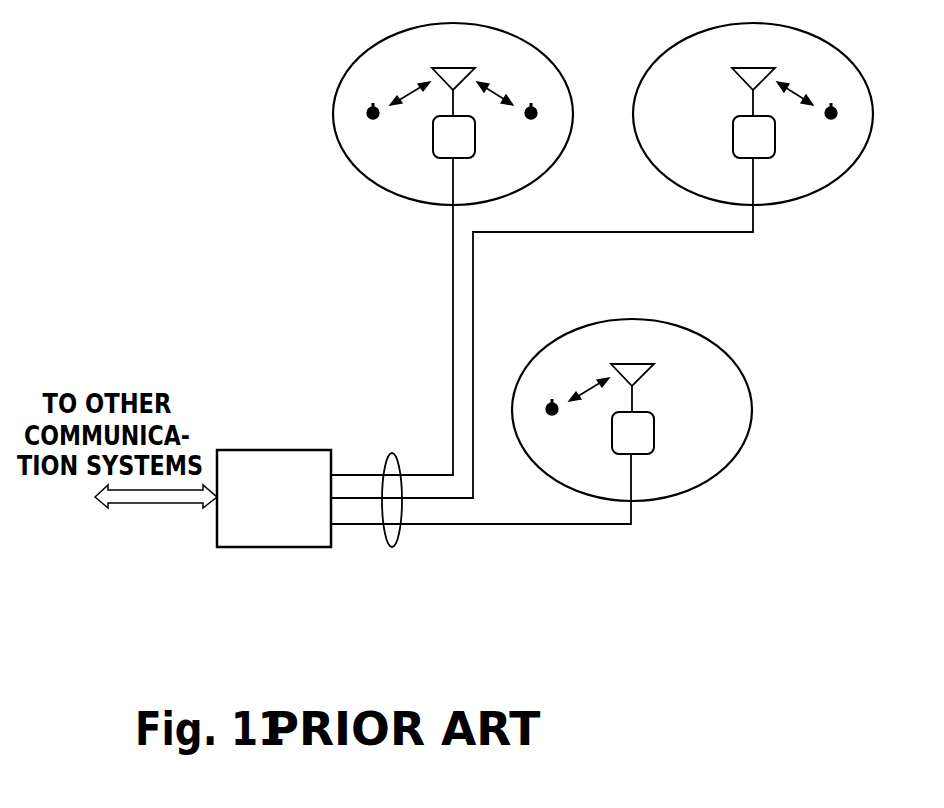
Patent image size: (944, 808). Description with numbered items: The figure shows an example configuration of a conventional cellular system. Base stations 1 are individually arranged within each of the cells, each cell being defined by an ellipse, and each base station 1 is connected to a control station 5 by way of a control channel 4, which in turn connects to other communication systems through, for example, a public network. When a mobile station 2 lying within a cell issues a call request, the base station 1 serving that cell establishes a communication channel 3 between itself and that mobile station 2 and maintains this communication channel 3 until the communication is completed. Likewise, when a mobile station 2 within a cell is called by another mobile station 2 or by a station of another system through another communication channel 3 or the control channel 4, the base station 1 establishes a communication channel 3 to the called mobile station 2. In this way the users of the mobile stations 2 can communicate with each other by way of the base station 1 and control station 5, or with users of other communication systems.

The base station 1 is at (463, 162).
The mobile station 2 is at (362, 123).
The communication channel 3 is at (403, 90).
The control channel 4 is at (392, 452).
The control station 5 is at (307, 448).